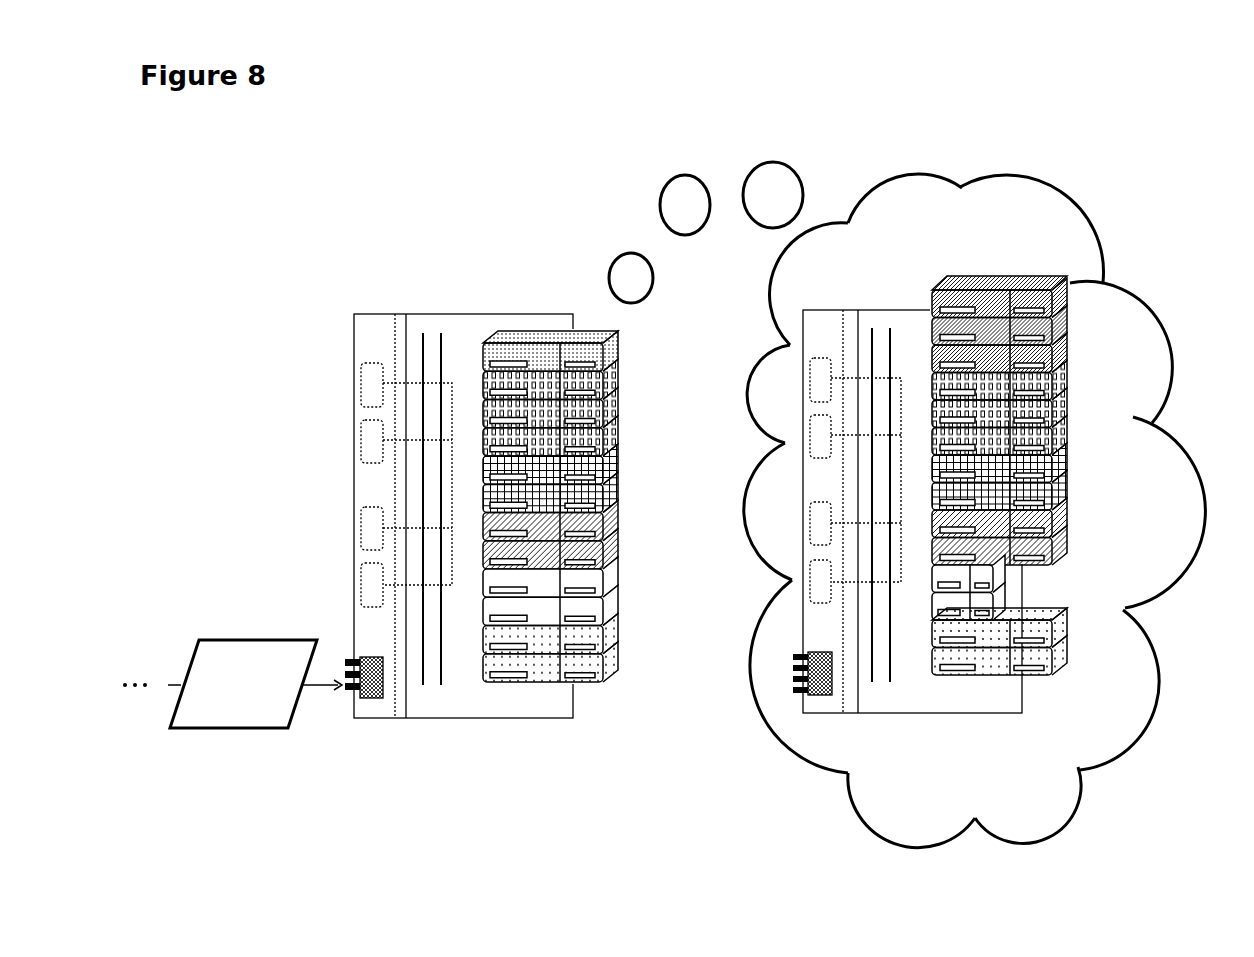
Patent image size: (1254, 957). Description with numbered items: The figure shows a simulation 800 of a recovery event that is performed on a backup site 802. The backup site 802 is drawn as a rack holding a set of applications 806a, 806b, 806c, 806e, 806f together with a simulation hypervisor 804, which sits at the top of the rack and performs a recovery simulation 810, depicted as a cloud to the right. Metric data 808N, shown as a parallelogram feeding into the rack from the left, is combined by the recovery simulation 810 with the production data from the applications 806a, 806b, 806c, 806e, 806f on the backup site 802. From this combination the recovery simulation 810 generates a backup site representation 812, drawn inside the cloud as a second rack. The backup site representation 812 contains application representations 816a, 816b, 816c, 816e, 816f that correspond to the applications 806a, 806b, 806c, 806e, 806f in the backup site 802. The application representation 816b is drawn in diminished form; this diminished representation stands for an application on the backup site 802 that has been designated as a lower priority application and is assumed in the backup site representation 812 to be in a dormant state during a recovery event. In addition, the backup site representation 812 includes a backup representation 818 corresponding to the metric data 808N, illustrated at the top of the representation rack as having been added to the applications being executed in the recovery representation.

The simulation 800 is at (988, 125).
The backup site 802 is at (470, 313).
The simulation hypervisor 804 is at (547, 330).
The application 806f is at (643, 362).
The application 806e is at (643, 442).
The application 806c is at (643, 500).
The application 806b is at (643, 557).
The application 806a is at (643, 613).
The metric data 808N is at (225, 728).
The recovery simulation 810 is at (758, 713).
The backup site representation 812 is at (915, 308).
The backup representation 818 is at (1087, 282).
The application representation 816f is at (1087, 363).
The application representation 816e is at (1087, 417).
The application representation 816c is at (1087, 490).
The application representation 816b is at (1087, 545).
The application representation 816a is at (1087, 597).